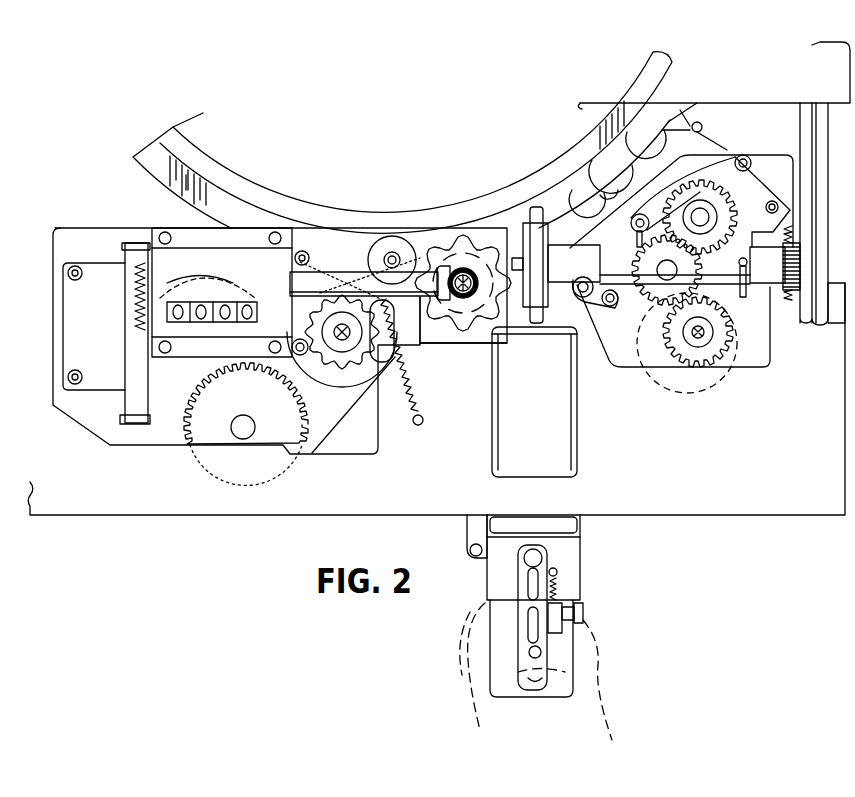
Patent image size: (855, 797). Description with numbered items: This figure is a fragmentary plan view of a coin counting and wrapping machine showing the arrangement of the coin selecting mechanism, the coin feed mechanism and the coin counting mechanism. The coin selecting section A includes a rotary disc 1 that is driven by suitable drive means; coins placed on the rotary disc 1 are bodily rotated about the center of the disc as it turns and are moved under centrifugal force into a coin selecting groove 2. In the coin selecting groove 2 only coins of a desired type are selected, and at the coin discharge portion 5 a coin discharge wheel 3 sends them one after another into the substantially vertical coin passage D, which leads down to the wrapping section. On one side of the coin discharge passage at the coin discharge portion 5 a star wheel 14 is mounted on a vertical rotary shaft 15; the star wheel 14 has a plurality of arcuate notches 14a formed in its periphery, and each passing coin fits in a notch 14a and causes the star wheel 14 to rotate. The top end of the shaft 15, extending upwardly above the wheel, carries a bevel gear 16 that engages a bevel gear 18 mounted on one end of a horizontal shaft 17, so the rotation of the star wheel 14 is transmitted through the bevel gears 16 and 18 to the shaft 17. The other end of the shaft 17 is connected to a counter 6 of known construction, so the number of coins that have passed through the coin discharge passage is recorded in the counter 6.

The rotary disc 1 is at (328, 173).
The coin selecting section A is at (123, 146).
The coin selecting groove 2 is at (670, 124).
The counter 6 is at (241, 279).
The star wheel 14 is at (455, 240).
The arcuate notches 14a is at (440, 257).
The vertical rotary shaft 15 is at (463, 262).
The bevel gear 16 is at (463, 300).
The horizontal shaft 17 is at (431, 300).
The bevel gear 18 is at (446, 263).
The coin discharge wheel 3 is at (528, 323).
The coin discharge portion 5 is at (548, 308).
The coin passage D is at (593, 580).